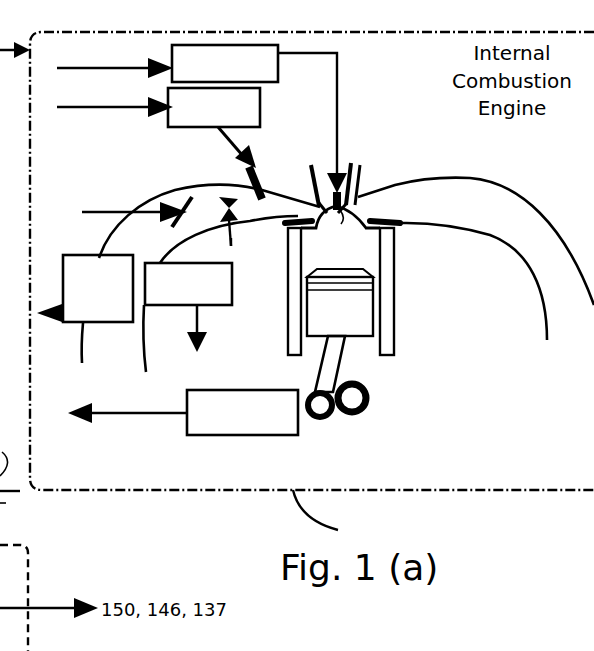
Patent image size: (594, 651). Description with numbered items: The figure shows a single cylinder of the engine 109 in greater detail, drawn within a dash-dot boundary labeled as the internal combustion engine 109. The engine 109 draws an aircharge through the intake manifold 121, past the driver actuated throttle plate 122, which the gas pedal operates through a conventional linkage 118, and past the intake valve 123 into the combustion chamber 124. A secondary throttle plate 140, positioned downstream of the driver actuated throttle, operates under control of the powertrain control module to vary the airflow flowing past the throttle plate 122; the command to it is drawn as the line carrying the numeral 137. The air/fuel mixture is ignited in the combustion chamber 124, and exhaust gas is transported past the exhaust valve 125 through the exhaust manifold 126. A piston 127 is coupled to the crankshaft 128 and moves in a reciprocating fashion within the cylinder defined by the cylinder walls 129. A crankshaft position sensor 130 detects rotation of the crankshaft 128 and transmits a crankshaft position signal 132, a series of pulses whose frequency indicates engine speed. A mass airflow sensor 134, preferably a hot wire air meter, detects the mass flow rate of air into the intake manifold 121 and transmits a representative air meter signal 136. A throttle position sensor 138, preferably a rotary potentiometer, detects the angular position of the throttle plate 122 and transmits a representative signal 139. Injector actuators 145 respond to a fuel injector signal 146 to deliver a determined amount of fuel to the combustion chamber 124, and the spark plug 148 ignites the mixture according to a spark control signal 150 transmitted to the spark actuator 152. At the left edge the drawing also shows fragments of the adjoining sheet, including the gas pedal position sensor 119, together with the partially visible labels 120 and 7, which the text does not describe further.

The engine 109 is at (468, 489).
The spark control signal 150 is at (106, 67).
The spark actuator 152 is at (283, 48).
The fuel injector signal 146 is at (68, 110).
The injector actuators 145 is at (262, 93).
The spark plug 148 is at (352, 162).
The intake valve 123 is at (307, 163).
The exhaust valve 125 is at (370, 188).
The combustion chamber 124 is at (351, 258).
The cylinder walls 129 is at (363, 340).
The piston 127 is at (318, 348).
The crankshaft 128 is at (372, 412).
The exhaust manifold 126 is at (492, 220).
The intake manifold 121 is at (163, 248).
The linkage 118 is at (115, 213).
The throttle plate 122 is at (157, 205).
The secondary throttle plate 140 is at (223, 198).
The throttle command signal 137 is at (233, 238).
The mass airflow sensor 134 is at (100, 323).
The air meter signal 136 is at (87, 255).
The throttle position sensor 138 is at (170, 307).
The throttle position signal 139 is at (203, 323).
The crankshaft position sensor 130 is at (257, 389).
The crankshaft position signal 132 is at (133, 413).
The signal line (partial numeral) 7 is at (5, 454).
The gas pedal position sensor 119 is at (0, 512).
The signal line 120 is at (0, 528).